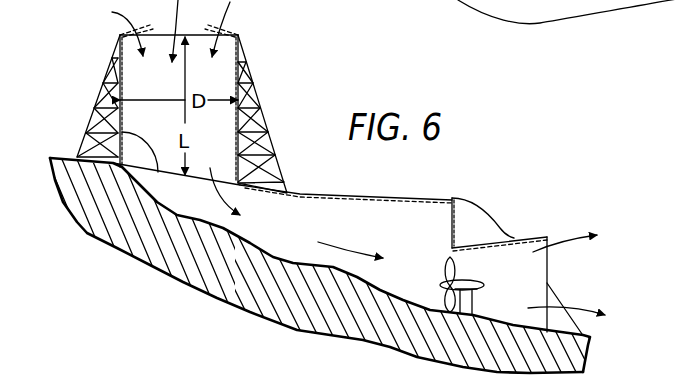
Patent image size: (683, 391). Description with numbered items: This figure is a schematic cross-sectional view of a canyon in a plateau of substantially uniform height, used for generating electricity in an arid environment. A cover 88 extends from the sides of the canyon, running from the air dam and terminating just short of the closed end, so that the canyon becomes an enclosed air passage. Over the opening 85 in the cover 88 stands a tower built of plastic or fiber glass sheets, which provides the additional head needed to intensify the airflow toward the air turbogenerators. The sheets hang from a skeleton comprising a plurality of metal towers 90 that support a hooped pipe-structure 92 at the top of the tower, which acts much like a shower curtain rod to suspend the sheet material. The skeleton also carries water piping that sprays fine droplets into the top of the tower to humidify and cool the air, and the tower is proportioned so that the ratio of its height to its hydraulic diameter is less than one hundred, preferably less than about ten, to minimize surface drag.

The opening 85 is at (95, 132).
The cover 88 is at (380, 200).
The metal towers 90 is at (260, 95).
The hooped pipe-structure 92 is at (240, 35).